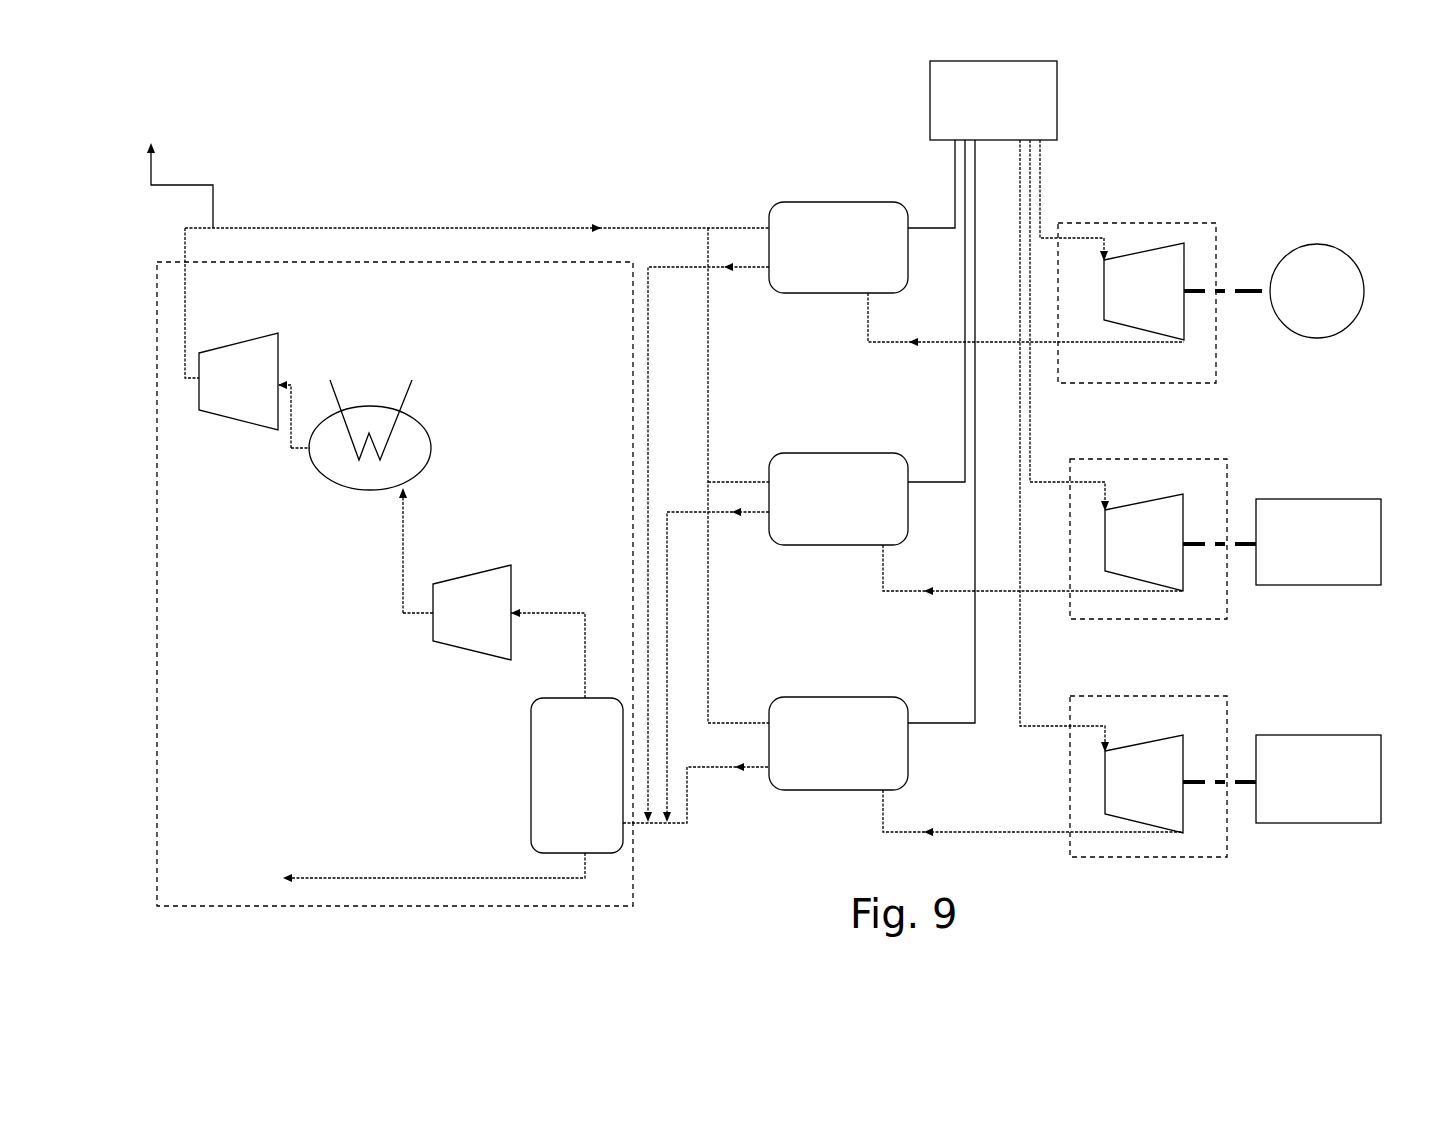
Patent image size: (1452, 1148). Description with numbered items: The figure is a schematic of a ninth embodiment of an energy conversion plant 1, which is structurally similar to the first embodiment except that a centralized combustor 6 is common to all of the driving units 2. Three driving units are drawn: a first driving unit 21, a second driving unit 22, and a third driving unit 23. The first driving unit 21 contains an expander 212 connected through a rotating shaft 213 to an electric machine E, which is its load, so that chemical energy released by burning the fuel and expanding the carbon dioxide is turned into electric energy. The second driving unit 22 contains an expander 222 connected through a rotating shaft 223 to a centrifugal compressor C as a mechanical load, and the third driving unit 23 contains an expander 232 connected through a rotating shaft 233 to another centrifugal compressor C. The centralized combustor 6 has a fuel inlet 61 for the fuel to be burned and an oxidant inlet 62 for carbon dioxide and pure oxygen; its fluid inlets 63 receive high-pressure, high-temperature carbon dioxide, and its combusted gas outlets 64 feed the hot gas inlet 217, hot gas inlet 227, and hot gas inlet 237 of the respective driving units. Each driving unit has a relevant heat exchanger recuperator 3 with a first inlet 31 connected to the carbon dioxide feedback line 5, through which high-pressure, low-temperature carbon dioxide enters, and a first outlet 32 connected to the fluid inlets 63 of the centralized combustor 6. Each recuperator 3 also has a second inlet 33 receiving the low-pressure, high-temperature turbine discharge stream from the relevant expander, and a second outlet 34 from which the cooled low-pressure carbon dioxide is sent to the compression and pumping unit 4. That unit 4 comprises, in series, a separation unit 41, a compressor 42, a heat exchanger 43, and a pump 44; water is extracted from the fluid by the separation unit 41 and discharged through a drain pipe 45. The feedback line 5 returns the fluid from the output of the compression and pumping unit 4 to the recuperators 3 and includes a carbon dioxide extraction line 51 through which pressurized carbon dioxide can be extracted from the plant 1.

The energy conversion plant 1 is at (1352, 154).
The driving unit 2 is at (1198, 175).
The heat exchanger recuperator 3 is at (803, 215).
The compression and pumping unit 4 is at (624, 888).
The carbon dioxide feedback line 5 is at (343, 228).
The centralized combustor 6 is at (1019, 406).
The first driving unit 21 is at (1216, 240).
The second driving unit 22 is at (1228, 487).
The third driving unit 23 is at (1228, 720).
The first inlet 31 is at (769, 228).
The first outlet 32 is at (908, 227).
The second inlet 33 is at (868, 296).
The second outlet 34 is at (769, 268).
The separation unit 41 is at (531, 763).
The compressor 42 is at (510, 565).
The heat exchanger 43 is at (431, 440).
The pump 44 is at (278, 350).
The drain pipe 45 is at (357, 876).
The carbon dioxide extraction line 51 is at (152, 172).
The fuel inlet 61 is at (1064, 78).
The oxidant inlet 62 is at (1064, 120).
The fluid inlets 63 is at (940, 160).
The combusted gas outlets 64 is at (1056, 161).
The expander 212 is at (1184, 325).
The rotating shaft 213 is at (1245, 293).
The hot gas inlet 217 is at (1108, 248).
The expander 222 is at (1172, 538).
The rotating shaft 223 is at (1246, 548).
The hot gas inlet 227 is at (1108, 493).
The expander 232 is at (1165, 797).
The rotating shaft 233 is at (1237, 785).
The hot gas inlet 237 is at (1108, 733).
The electric machine E is at (1352, 277).
The centrifugal compressor C is at (1345, 505).